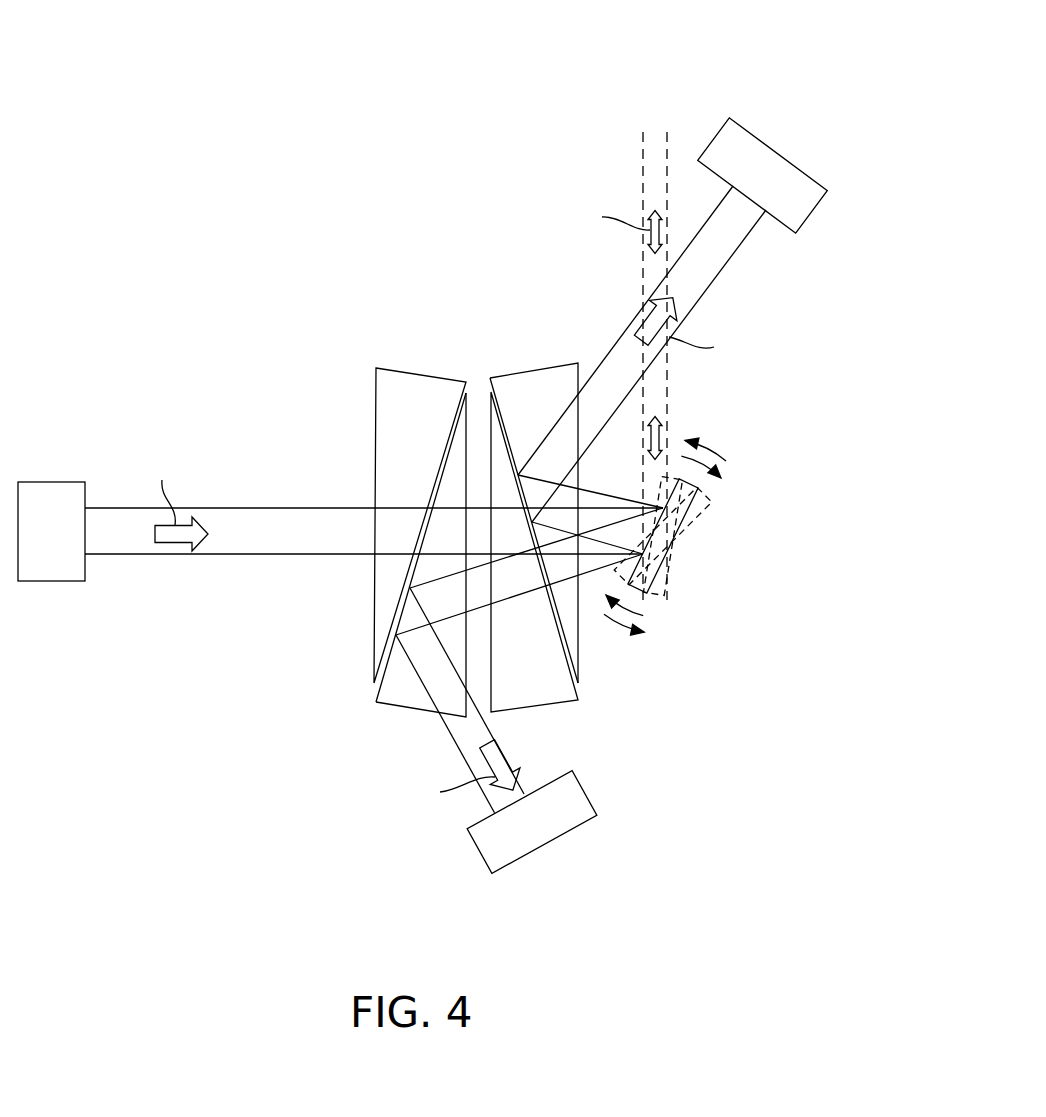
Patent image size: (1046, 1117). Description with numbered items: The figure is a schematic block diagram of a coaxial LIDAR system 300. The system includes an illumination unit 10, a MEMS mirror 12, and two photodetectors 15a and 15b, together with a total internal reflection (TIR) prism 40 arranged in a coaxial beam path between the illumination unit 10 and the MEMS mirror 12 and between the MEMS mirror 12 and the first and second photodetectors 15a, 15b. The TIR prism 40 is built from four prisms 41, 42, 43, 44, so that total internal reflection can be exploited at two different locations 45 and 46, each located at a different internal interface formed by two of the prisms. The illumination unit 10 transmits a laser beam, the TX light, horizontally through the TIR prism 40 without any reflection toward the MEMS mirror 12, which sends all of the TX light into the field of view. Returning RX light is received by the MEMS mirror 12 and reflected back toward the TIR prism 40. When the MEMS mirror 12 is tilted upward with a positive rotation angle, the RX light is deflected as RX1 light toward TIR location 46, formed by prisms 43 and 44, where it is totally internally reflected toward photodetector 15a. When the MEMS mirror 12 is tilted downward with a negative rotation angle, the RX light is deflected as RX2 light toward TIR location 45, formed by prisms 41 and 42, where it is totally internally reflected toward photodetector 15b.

The coaxial LIDAR system 300 is at (106, 60).
The illumination unit 10 is at (52, 482).
The MEMS mirror 12 is at (672, 543).
The first photodetector 15a is at (815, 216).
The second photodetector 15b is at (586, 795).
The total internal reflection (TIR) prism 40 is at (475, 377).
The prism 41 is at (404, 368).
The prism 42 is at (390, 710).
The prism 43 is at (562, 710).
The prism 44 is at (538, 367).
The TIR location 45 is at (401, 618).
The TIR location 46 is at (524, 493).